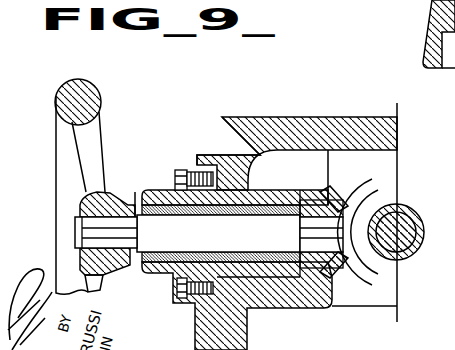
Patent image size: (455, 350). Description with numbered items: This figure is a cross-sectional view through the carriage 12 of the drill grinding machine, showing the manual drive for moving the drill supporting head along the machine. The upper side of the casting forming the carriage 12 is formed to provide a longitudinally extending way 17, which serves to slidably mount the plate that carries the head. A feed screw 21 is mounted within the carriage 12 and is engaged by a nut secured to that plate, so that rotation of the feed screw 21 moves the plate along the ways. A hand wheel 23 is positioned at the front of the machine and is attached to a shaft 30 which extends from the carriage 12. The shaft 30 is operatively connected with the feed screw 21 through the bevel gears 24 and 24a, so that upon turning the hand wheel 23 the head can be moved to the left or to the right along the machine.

The carriage 12 is at (276, 117).
The longitudinally extending way 17 is at (232, 131).
The feed screw 21 is at (402, 210).
The hand wheel 23 is at (100, 97).
The bevel gear 24 is at (365, 288).
The bevel gear 24a is at (338, 189).
The shaft 30 is at (140, 213).